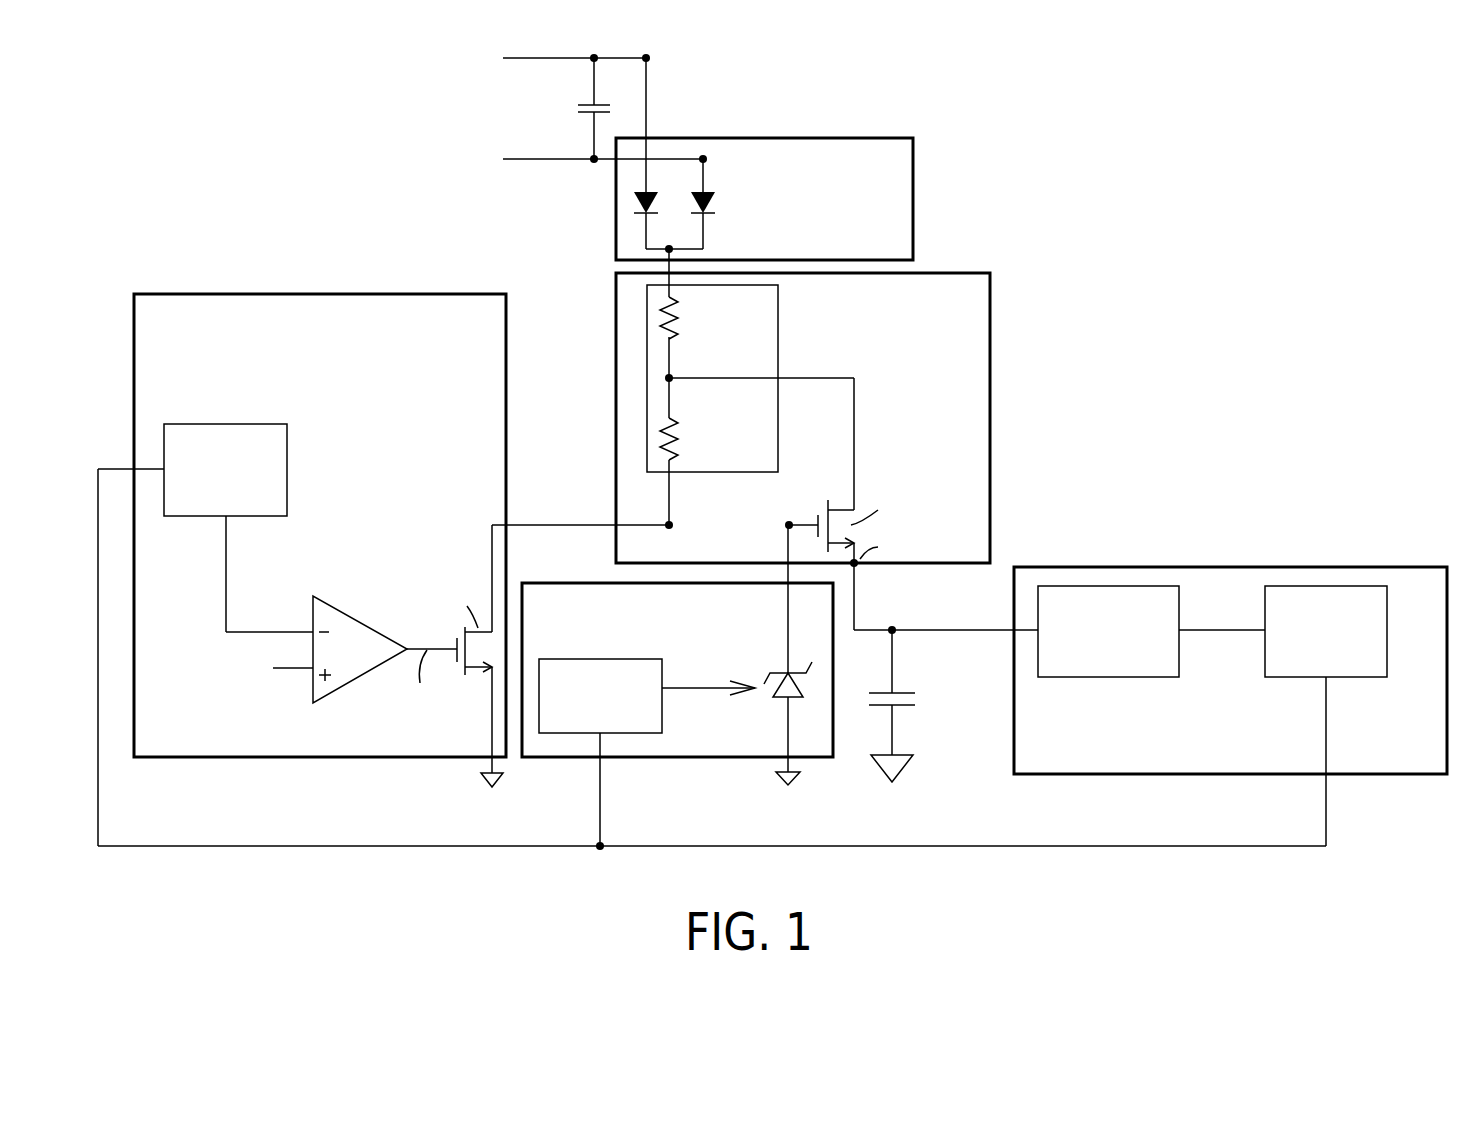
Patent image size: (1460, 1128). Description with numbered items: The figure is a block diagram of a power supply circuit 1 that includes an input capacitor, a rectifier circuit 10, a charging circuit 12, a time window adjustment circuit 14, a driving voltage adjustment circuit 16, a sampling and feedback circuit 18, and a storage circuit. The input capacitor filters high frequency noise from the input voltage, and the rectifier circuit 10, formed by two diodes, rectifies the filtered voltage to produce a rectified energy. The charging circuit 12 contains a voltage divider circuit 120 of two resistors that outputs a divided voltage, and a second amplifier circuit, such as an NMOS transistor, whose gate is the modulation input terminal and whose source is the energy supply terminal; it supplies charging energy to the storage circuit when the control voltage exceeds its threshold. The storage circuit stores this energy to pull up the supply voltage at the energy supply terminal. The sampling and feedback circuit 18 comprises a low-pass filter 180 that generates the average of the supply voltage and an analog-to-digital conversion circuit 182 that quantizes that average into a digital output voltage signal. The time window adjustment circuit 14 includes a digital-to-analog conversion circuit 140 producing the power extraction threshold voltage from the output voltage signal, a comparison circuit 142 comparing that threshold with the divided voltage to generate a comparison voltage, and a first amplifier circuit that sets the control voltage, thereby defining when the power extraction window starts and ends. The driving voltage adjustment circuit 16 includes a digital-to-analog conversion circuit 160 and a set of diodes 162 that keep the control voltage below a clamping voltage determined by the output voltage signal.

The power supply circuit 1 is at (1233, 156).
The rectifier circuit 10 is at (913, 197).
The charging circuit 12 is at (834, 451).
The voltage divider circuit 120 is at (778, 348).
The time window adjustment circuit 14 is at (320, 498).
The digital-to-analog conversion circuit 140 is at (287, 466).
The comparison circuit 142 is at (368, 625).
The driving voltage adjustment circuit 16 is at (677, 647).
The digital-to-analog conversion circuit 160 is at (662, 705).
The set of diodes 162 is at (773, 682).
The sampling and feedback circuit 18 is at (1230, 672).
The low-pass filter 180 is at (1179, 648).
The analog-to-digital conversion circuit 182 is at (1387, 648).